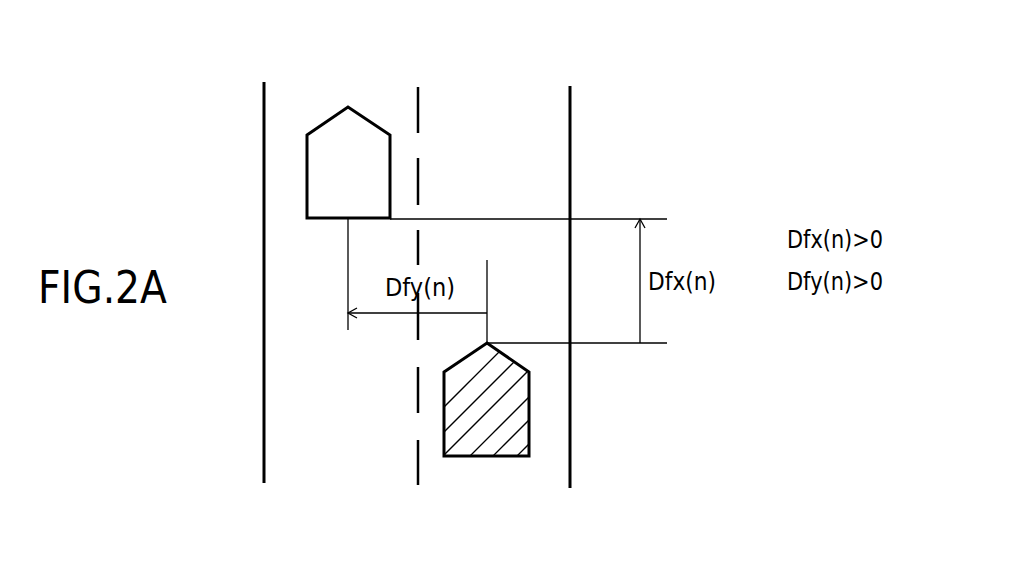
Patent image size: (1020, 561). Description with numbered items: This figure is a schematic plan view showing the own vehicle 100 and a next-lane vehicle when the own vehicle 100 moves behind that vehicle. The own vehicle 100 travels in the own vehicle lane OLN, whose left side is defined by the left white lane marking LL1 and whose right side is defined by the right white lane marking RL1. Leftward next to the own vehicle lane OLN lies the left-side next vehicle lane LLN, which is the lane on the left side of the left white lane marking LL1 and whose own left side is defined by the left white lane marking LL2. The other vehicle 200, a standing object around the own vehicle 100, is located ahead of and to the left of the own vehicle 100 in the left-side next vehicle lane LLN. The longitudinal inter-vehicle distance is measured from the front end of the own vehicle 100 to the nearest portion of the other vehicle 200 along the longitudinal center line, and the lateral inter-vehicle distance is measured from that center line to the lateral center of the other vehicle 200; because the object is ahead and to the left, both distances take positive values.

The other vehicle 200 is at (307, 186).
The own vehicle 100 is at (529, 405).
The left white lane marking LL1 is at (416, 302).
The left white lane marking LL2 is at (265, 300).
The right white lane marking RL1 is at (569, 302).
The left-side next vehicle lane LLN is at (344, 88).
The own vehicle lane OLN is at (496, 88).